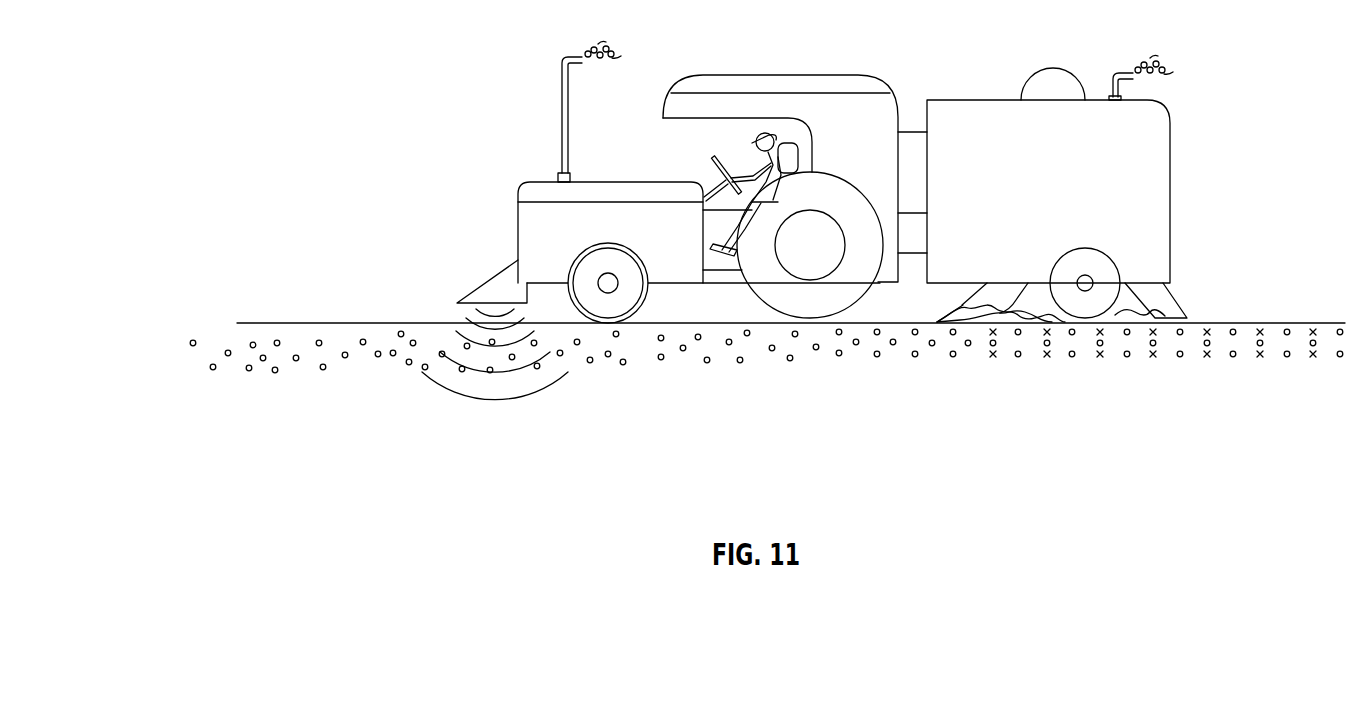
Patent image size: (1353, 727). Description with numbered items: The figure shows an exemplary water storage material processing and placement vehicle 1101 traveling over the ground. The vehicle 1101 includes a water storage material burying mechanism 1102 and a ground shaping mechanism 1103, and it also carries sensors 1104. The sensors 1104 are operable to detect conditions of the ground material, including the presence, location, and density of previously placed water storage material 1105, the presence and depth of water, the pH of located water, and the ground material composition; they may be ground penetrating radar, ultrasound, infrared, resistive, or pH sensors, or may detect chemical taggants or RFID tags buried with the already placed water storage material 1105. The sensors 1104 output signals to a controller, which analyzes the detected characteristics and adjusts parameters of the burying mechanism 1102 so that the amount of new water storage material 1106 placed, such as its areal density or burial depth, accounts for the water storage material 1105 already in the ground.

The water storage material processing and placement vehicle 1101 is at (1162, 130).
The water storage material burying mechanism 1102 is at (998, 292).
The ground shaping mechanism 1103 is at (1170, 302).
The sensors 1104 is at (490, 290).
The previously placed water storage material 1105 is at (213, 367).
The new water storage material 1106 is at (1290, 415).